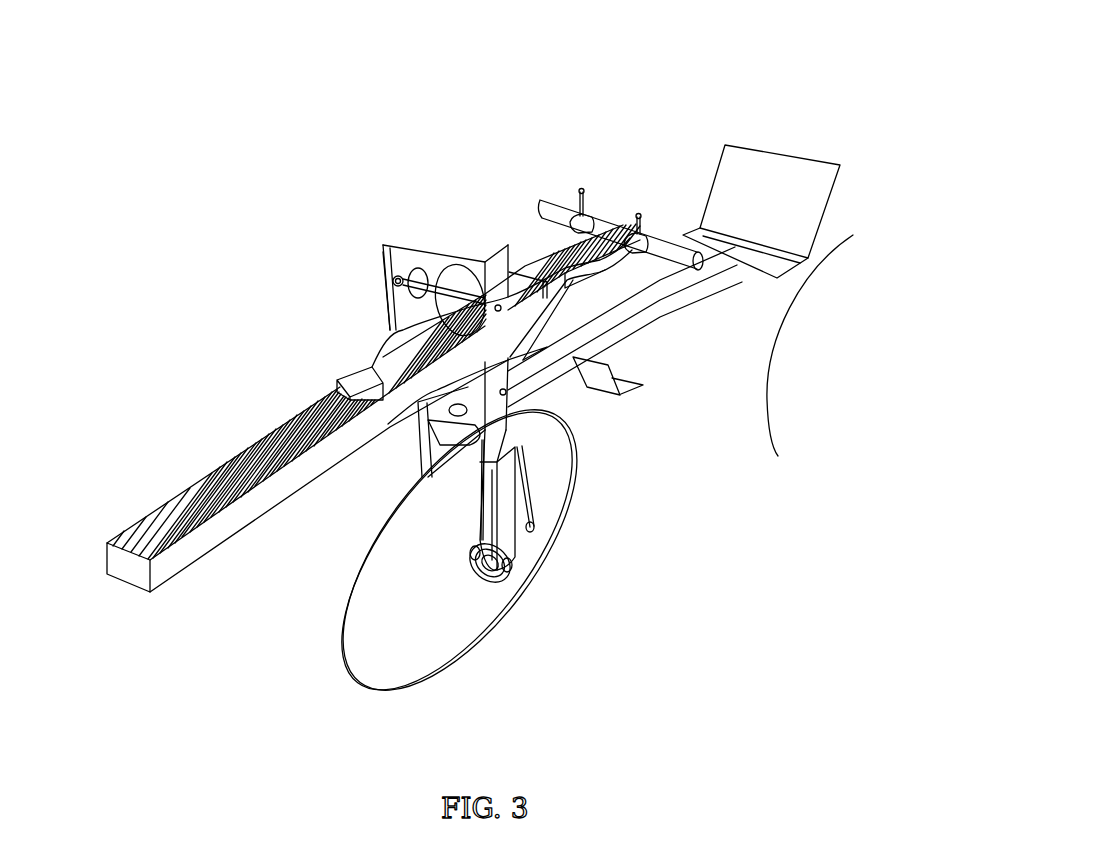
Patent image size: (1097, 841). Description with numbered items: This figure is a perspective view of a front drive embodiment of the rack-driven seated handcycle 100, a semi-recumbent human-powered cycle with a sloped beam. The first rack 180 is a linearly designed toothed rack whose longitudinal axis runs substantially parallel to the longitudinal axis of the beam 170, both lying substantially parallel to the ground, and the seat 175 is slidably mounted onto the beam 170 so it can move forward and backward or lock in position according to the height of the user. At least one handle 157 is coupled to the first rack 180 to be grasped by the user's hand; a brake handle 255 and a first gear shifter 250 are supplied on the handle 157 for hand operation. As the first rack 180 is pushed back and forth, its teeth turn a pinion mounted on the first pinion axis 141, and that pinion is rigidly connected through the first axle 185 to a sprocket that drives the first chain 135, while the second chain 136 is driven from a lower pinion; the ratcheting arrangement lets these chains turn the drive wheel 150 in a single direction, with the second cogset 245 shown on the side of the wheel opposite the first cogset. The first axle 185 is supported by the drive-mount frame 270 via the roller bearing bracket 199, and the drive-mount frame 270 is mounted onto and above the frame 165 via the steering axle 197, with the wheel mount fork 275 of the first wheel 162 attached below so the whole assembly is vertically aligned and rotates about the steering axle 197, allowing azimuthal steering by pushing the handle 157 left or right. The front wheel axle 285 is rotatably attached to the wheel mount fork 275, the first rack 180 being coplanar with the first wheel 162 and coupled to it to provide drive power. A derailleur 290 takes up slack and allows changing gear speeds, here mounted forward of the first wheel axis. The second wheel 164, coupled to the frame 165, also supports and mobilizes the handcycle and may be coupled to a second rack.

The rack-driven seated handcycle 100 is at (654, 53).
The first chain 135 is at (387, 307).
The second chain 136 is at (520, 487).
The first pinion axis 141 is at (418, 278).
The drive wheel 150 is at (570, 497).
The handle 157 is at (546, 203).
The first wheel 162 is at (345, 632).
The second wheel 164 is at (792, 427).
The frame 165 is at (503, 480).
The beam 170 is at (667, 310).
The seat 175 is at (768, 283).
The first rack 180 is at (307, 410).
The first axle 185 is at (442, 300).
The steering axle 197 is at (457, 435).
The roller bearing bracket 199 is at (390, 285).
The second cogset 245 is at (490, 585).
The first gear shifter 250 is at (582, 189).
The brake handle 255 is at (638, 214).
The drive-mount frame 270 is at (407, 237).
The wheel mount fork 275 is at (425, 430).
The front wheel axle 285 is at (523, 566).
The derailleur 290 is at (533, 527).